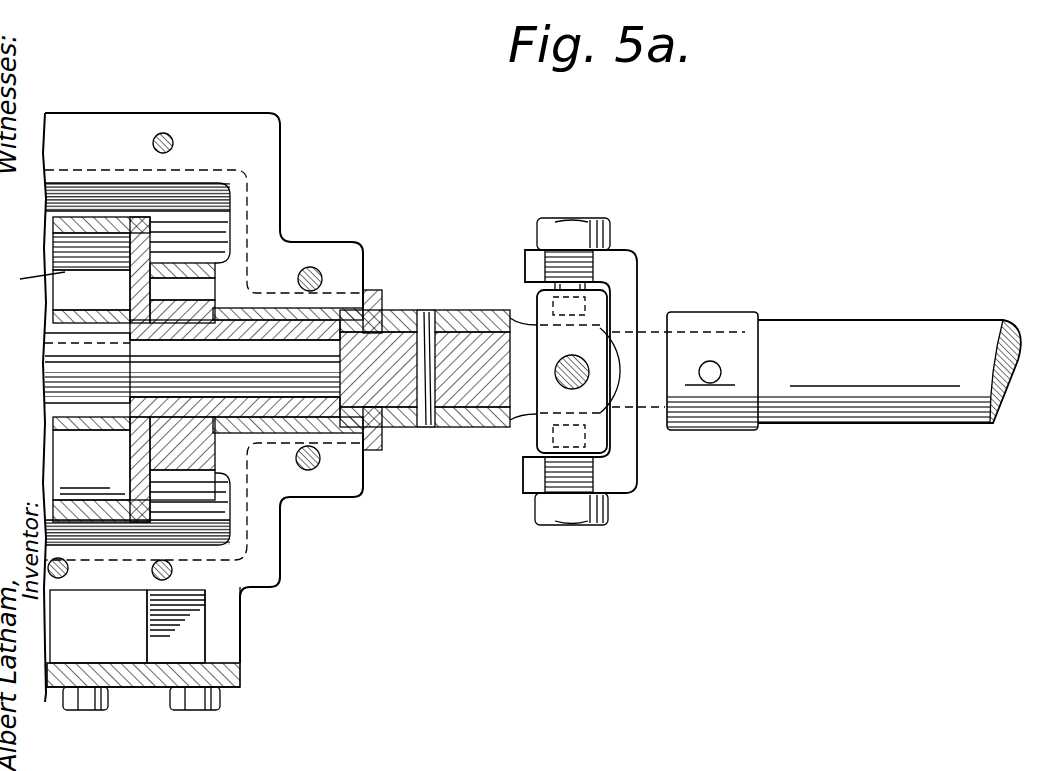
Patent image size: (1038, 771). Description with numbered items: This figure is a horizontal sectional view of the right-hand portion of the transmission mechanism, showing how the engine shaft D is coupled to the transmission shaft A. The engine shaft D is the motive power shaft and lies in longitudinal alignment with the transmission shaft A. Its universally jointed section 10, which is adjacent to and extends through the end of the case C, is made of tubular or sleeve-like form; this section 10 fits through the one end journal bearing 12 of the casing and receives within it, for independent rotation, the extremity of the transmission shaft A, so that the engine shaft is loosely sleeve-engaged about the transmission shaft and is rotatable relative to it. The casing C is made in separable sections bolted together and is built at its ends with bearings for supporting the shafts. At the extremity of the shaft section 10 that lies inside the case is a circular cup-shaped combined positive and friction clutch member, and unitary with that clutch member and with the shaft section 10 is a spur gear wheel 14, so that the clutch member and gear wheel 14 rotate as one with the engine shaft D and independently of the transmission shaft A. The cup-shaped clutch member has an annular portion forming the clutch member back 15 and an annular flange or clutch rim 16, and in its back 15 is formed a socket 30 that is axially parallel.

The universally jointed section 10 is at (452, 330).
The journal bearing 12 is at (273, 318).
The spur gear wheel 14 is at (203, 263).
The clutch member back 15 is at (135, 271).
The clutch rim 16 is at (103, 512).
The socket 30 is at (140, 457).
The transmission shaft A is at (65, 352).
The casing C is at (203, 411).
The engine shaft D is at (772, 371).